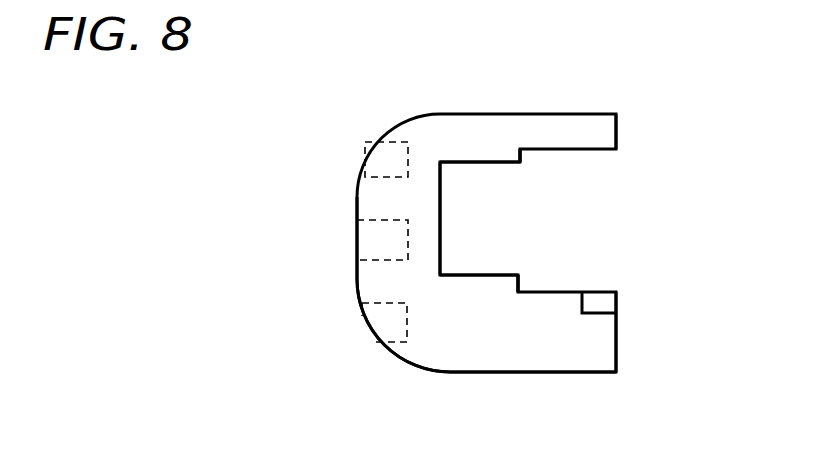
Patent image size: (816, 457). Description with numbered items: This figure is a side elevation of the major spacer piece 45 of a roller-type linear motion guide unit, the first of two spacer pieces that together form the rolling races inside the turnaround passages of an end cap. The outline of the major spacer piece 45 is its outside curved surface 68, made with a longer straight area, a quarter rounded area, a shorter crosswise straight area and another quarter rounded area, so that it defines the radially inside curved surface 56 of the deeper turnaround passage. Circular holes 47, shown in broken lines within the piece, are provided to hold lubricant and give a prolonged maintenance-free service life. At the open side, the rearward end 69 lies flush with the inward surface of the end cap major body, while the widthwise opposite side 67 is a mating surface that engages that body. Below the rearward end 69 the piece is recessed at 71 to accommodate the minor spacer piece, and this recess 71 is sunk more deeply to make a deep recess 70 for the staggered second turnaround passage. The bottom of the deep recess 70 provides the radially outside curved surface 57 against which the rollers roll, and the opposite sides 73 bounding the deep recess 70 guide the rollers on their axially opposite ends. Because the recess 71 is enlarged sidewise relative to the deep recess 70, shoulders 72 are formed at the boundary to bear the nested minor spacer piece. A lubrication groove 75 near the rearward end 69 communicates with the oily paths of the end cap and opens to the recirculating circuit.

The major spacer piece 45 is at (602, 108).
The circular holes 47 is at (382, 177).
The radially inside curved surface 56 is at (357, 281).
The radially outside curved surface 57 is at (440, 243).
The widthwise opposite side 67 is at (518, 347).
The outside curved surface 68 is at (357, 228).
The rearward end 69 is at (618, 133).
The deep recess 70 is at (489, 227).
The recess 71 is at (538, 218).
The shoulders 72 is at (522, 155).
The opposite sides 73 is at (481, 163).
The lubrication grooves 75 is at (603, 307).